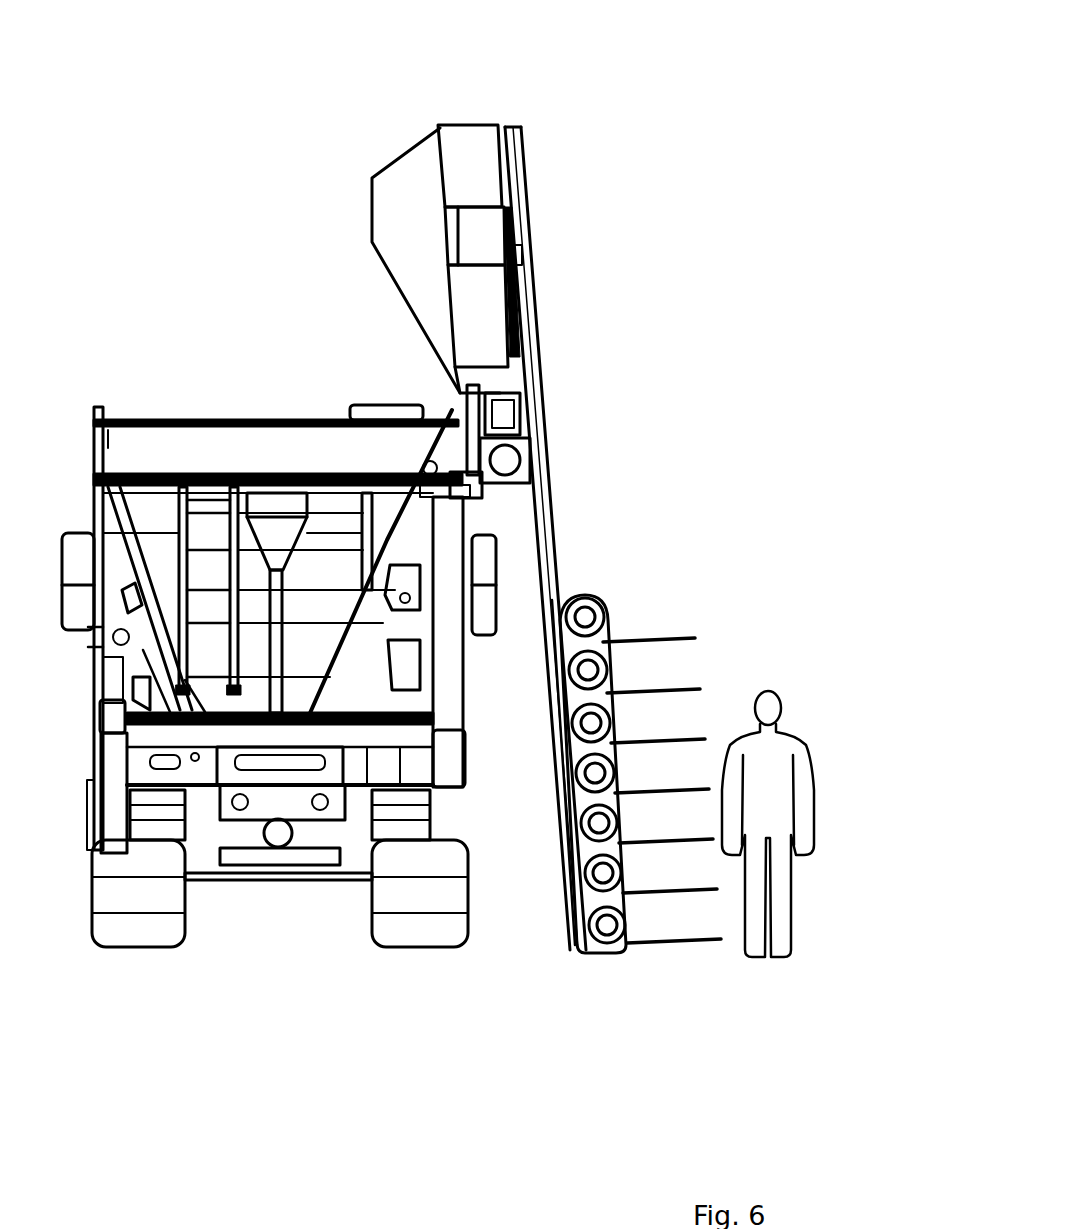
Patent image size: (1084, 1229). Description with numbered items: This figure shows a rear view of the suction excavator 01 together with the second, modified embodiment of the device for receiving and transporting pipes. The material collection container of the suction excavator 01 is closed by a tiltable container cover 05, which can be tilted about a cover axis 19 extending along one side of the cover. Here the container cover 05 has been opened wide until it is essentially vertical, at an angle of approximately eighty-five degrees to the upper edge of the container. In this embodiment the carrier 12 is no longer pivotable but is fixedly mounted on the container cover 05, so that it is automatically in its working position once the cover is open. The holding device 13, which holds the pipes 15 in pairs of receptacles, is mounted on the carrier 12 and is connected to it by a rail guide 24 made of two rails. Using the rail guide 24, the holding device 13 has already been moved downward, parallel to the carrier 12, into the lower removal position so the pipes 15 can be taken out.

The suction excavator 01 is at (163, 329).
The container cover 05 is at (463, 143).
The carrier 12 is at (524, 192).
The rail guide 24 is at (538, 425).
The cover axis 19 is at (478, 491).
The holding device 13 is at (557, 598).
The pipes or tubes 15 is at (603, 617).